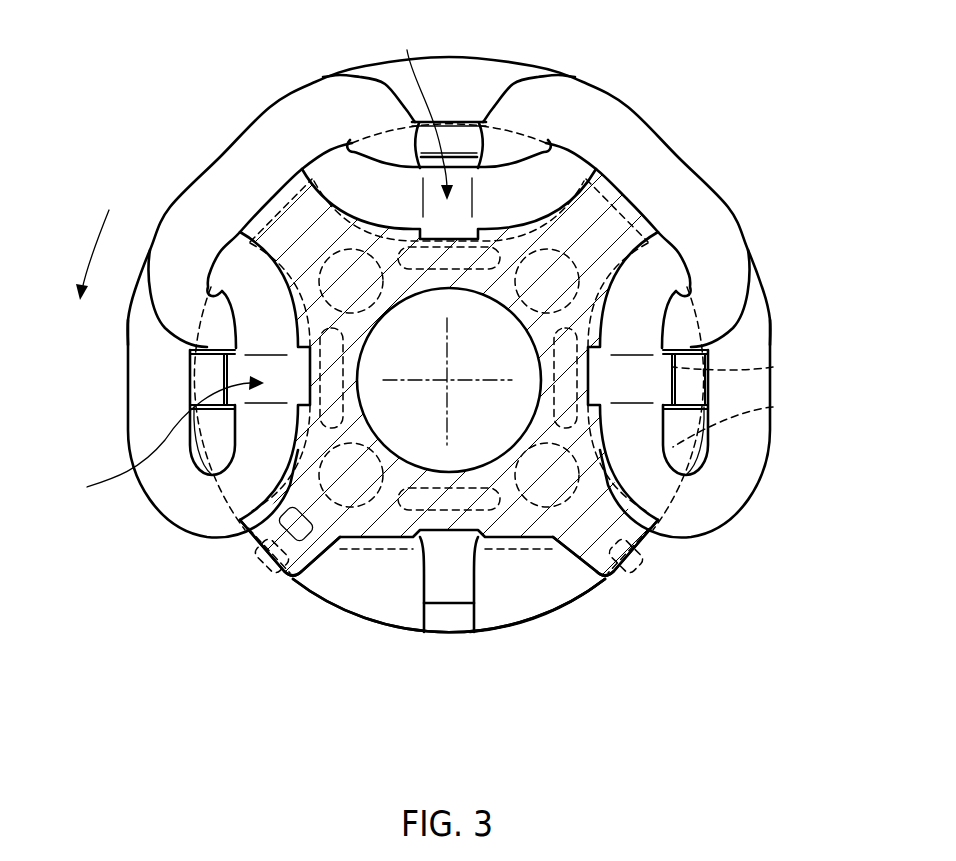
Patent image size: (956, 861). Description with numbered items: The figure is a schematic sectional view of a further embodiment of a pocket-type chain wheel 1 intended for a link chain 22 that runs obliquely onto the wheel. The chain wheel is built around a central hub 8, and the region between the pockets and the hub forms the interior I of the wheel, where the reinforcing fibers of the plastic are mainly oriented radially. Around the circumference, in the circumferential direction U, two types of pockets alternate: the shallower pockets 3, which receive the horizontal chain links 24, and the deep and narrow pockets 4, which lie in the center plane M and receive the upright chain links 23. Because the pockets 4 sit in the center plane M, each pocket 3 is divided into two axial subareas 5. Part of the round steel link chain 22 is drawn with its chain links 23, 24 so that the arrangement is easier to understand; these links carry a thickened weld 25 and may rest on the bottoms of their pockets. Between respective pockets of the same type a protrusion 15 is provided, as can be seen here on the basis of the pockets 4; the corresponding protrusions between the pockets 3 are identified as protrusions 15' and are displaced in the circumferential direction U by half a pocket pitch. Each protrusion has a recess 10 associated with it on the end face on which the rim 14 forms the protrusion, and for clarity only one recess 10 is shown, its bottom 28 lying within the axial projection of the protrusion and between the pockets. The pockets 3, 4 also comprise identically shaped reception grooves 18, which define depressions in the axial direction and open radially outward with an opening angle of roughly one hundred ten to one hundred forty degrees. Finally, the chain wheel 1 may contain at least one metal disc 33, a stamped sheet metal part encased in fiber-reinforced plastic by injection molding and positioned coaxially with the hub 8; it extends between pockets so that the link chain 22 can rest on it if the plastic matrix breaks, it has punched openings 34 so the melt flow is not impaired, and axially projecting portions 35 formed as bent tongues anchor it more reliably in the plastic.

The pocket-type chain wheel 1 is at (290, 640).
The pocket 3 is at (211, 154).
The pocket 4 is at (262, 255).
The axial subarea 5 is at (372, 583).
The hub 8 is at (488, 361).
The recess 10 is at (247, 530).
The rim 14 is at (558, 600).
The protrusion 15 is at (358, 106).
The protrusion 15' is at (449, 379).
The reception groove 18 is at (446, 595).
The link chain 22 is at (663, 157).
The upright chain link 23 is at (143, 392).
The horizontal chain link 24 is at (186, 205).
The thickened weld 25 is at (463, 181).
The bottom of recess 28 is at (270, 560).
The metal disc 33 is at (637, 550).
The opening 34 is at (773, 407).
The axially projecting portion 35 is at (773, 367).
The circumferential direction U is at (92, 255).
The center plane M is at (784, 540).
The interior I is at (594, 246).